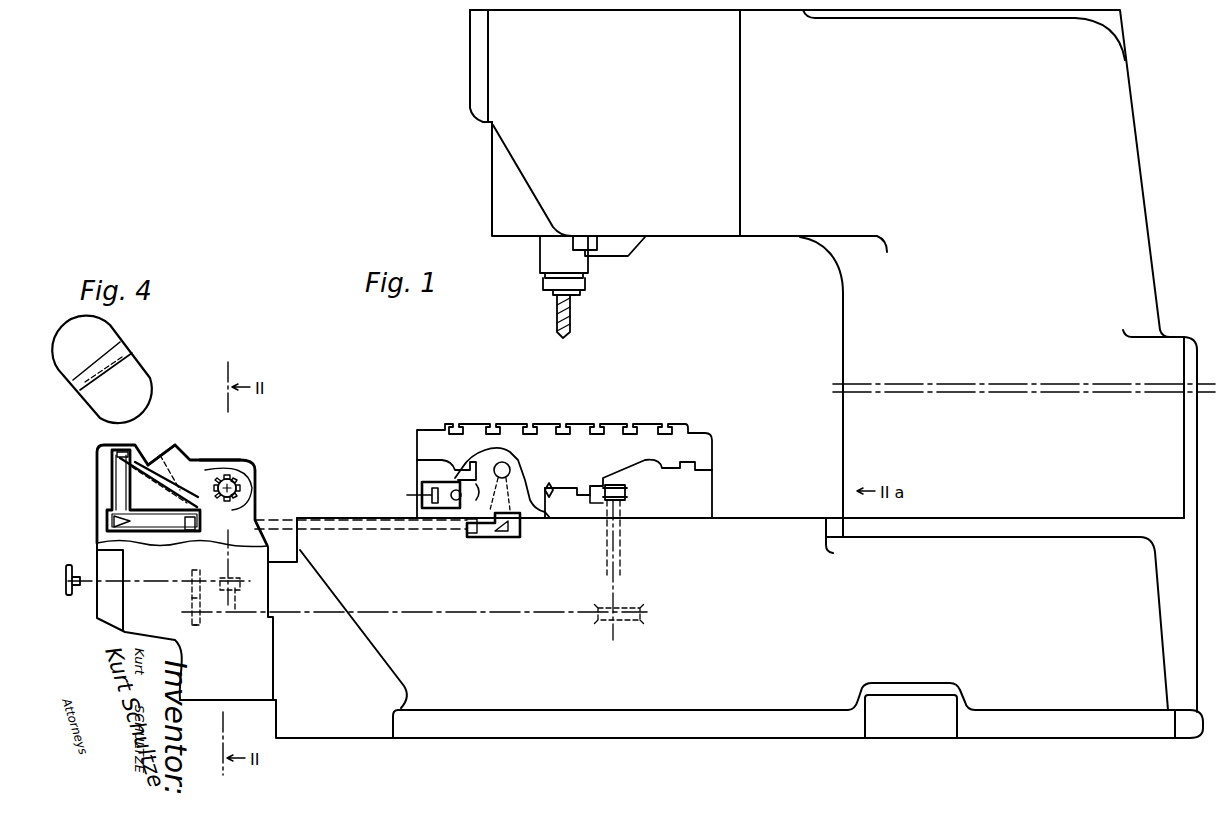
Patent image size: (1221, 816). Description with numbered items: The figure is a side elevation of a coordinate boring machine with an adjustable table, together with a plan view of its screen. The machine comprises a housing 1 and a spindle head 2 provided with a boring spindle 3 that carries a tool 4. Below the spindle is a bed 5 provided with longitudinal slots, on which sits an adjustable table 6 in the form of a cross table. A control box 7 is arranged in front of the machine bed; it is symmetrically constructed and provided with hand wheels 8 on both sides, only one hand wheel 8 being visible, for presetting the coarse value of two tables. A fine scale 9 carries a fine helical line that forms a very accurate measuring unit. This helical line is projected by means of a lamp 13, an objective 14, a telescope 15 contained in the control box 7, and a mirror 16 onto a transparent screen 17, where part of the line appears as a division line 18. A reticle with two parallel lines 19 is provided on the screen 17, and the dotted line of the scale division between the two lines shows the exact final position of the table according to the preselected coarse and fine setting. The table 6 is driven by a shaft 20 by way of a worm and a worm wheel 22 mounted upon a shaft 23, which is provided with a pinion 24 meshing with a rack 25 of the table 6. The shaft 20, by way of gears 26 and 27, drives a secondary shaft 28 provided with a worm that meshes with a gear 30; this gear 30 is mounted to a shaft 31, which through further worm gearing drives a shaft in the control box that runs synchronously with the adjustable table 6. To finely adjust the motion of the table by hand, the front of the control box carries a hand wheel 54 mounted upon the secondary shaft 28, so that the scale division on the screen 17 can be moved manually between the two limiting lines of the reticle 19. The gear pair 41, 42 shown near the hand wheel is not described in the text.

In FIG. 1, the housing 1 is at (1103, 95).
In FIG. 1, the spindle head 2 is at (532, 148).
In FIG. 1, the boring spindle 3 is at (553, 257).
In FIG. 1, the tool 4 is at (553, 328).
In FIG. 1, the bed 5 is at (762, 535).
In FIG. 1, the adjustable table 6 is at (575, 442).
In FIG. 1, the control box 7 is at (237, 677).
In FIG. 1, the hand wheel 8 is at (240, 484).
In FIG. 1, the fine scale 9 is at (505, 462).
In FIG. 1, the lamp 13 is at (458, 510).
In FIG. 1, the objective 14 is at (520, 528).
In FIG. 1, the telescope 15 is at (140, 531).
In FIG. 1, the mirror 16 is at (192, 492).
In FIG. 1, the transparent screen 17 is at (173, 446).
In FIG. 4, the transparent screen 17 is at (140, 383).
In FIG. 4, the division line 18 is at (110, 347).
In FIG. 4, the reticle with two parallel lines 19 is at (118, 359).
In FIG. 1, the shaft 20 is at (500, 604).
In FIG. 1, the worm wheel 22 is at (626, 609).
In FIG. 1, the shaft 23 is at (622, 510).
In FIG. 1, the pinion 24 is at (626, 491).
In FIG. 1, the rack 25 is at (598, 500).
In FIG. 1, the gear 26 is at (192, 622).
In FIG. 1, the gear 27 is at (192, 583).
In FIG. 1, the secondary shaft 28 is at (151, 583).
In FIG. 1, the gear 30 is at (238, 606).
In FIG. 1, the shaft 31 is at (228, 555).
In FIG. 1, the gear pair 41 is at (240, 457).
In FIG. 1, the gear pair 42 is at (231, 450).
In FIG. 1, the hand wheel 54 is at (68, 562).